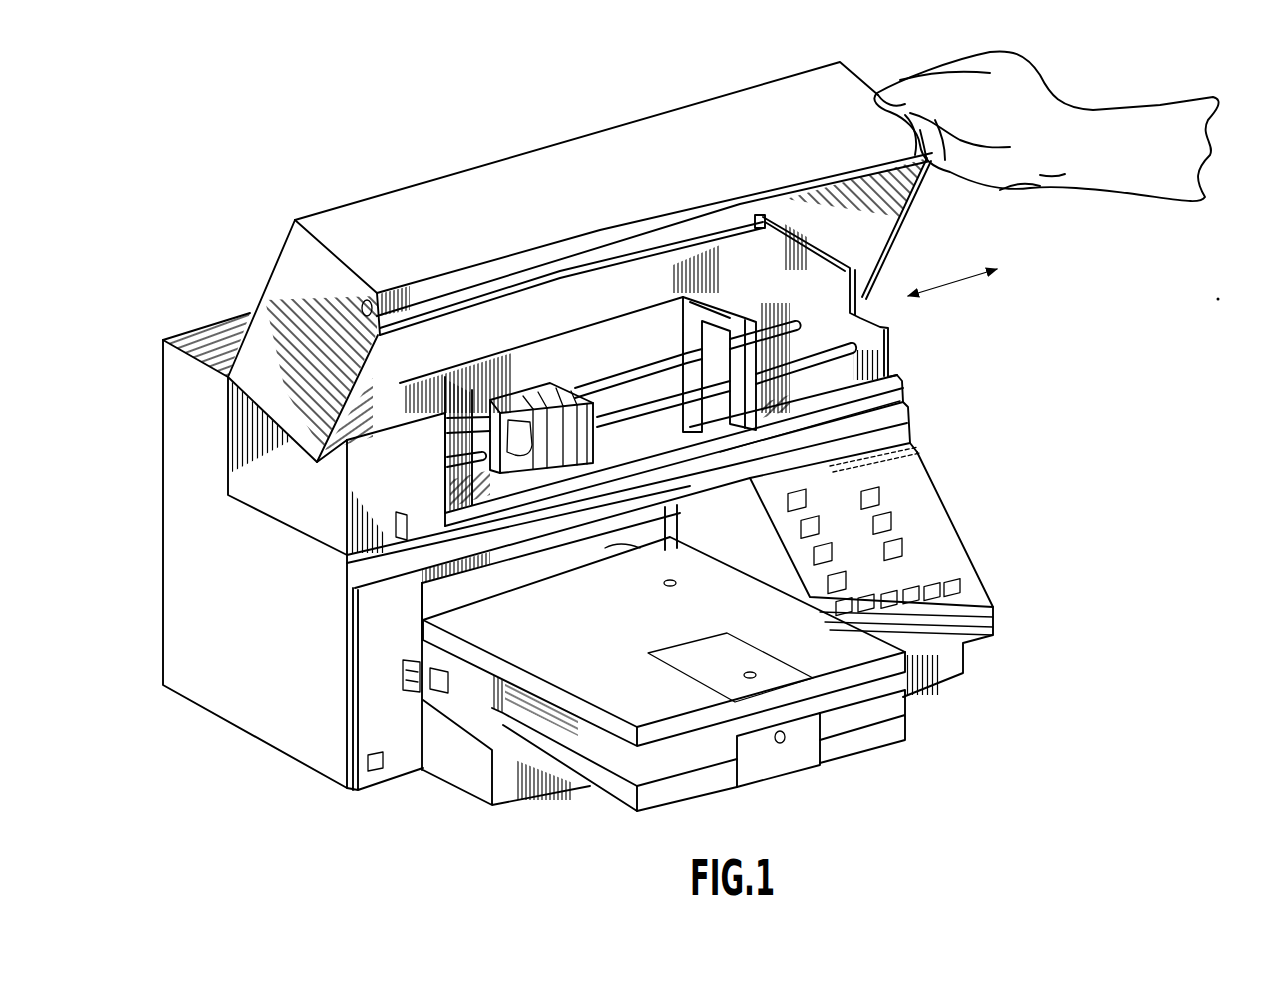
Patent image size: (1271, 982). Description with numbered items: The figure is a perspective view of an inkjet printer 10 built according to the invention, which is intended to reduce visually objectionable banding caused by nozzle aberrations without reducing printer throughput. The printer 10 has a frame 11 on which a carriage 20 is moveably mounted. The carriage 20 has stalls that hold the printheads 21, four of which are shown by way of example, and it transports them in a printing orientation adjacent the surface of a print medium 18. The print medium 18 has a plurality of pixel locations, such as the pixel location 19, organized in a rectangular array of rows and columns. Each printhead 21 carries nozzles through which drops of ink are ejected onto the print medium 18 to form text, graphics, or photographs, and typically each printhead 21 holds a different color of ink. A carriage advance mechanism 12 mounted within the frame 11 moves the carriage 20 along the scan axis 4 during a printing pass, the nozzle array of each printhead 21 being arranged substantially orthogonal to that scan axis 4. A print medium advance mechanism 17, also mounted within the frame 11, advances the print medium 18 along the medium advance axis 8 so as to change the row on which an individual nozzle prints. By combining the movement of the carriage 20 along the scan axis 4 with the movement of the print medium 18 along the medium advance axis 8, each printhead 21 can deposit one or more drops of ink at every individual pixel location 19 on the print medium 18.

The printer 10 is at (1060, 418).
The scan axis 4 is at (955, 283).
The frame 11 is at (872, 313).
The carriage advance mechanism 12 is at (614, 358).
The printhead 21 is at (525, 455).
The carriage 20 is at (510, 478).
The medium advance axis 8 is at (452, 614).
The print medium advance mechanism 17 is at (636, 531).
The print medium 18 is at (422, 602).
The pixel location 19 is at (670, 586).